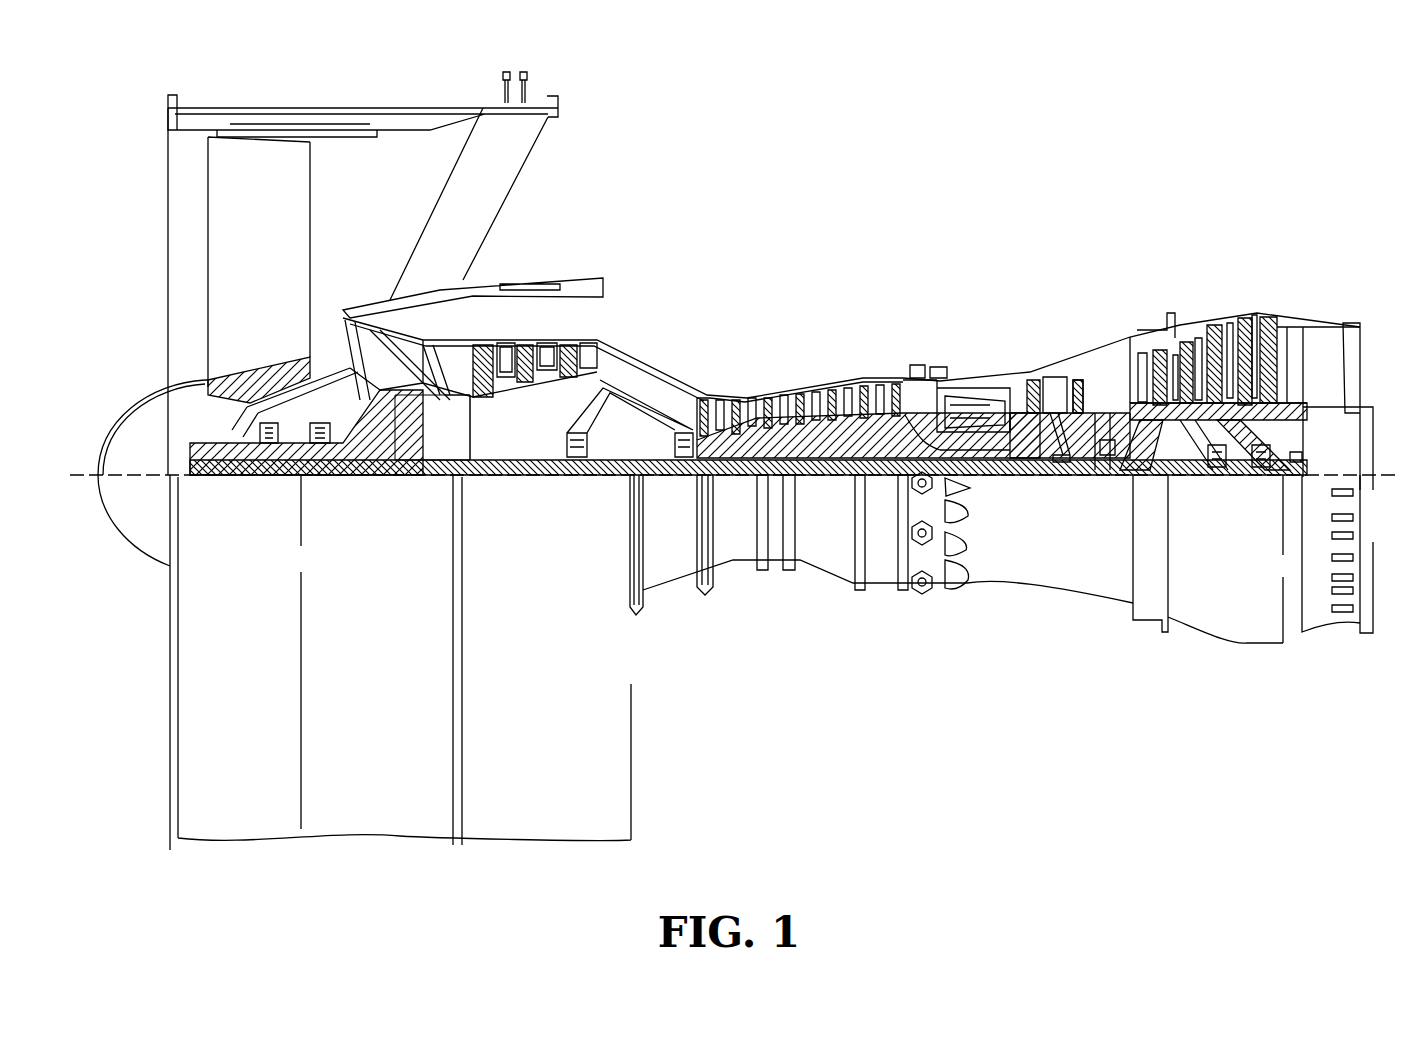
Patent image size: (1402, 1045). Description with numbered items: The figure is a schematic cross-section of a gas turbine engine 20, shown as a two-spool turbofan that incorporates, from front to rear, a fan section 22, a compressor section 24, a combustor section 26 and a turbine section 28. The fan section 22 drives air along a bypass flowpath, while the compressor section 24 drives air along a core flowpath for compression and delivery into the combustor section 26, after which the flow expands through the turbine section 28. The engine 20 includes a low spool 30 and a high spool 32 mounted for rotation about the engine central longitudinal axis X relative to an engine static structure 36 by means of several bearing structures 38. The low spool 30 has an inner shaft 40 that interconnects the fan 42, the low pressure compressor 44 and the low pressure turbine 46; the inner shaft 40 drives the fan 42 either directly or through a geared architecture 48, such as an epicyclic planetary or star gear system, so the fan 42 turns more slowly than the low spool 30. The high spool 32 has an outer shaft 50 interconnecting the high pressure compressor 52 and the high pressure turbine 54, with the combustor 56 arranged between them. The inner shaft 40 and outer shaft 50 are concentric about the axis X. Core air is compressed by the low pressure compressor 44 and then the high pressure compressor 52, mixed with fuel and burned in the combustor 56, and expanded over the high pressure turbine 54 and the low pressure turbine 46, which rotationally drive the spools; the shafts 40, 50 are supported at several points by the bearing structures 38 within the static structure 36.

The gas turbine engine 20 is at (1092, 172).
The fan section 22 is at (162, 77).
The compressor section 24 is at (907, 232).
The combustor section 26 is at (907, 232).
The turbine section 28 is at (1033, 232).
The low spool 30 is at (807, 477).
The high spool 32 is at (875, 430).
The engine static structure 36 is at (882, 584).
The bearing structures 38 is at (1043, 319).
The inner shaft 40 is at (658, 477).
The fan 42 is at (247, 246).
The low pressure compressor 44 is at (547, 348).
The low pressure turbine 46 is at (1220, 330).
The geared architecture 48 is at (403, 455).
The outer shaft 50 is at (1028, 477).
The high pressure compressor 52 is at (813, 430).
The high pressure turbine 54 is at (1052, 377).
The combustor 56 is at (975, 403).
The engine central longitudinal axis X is at (83, 476).